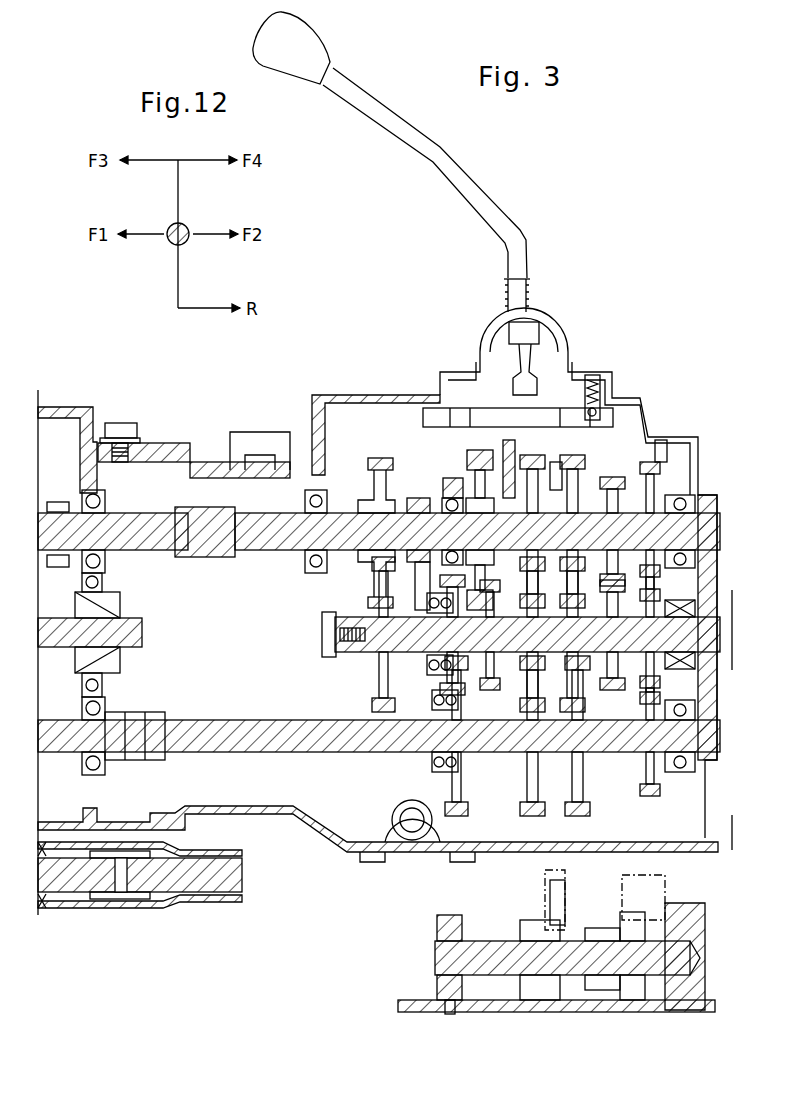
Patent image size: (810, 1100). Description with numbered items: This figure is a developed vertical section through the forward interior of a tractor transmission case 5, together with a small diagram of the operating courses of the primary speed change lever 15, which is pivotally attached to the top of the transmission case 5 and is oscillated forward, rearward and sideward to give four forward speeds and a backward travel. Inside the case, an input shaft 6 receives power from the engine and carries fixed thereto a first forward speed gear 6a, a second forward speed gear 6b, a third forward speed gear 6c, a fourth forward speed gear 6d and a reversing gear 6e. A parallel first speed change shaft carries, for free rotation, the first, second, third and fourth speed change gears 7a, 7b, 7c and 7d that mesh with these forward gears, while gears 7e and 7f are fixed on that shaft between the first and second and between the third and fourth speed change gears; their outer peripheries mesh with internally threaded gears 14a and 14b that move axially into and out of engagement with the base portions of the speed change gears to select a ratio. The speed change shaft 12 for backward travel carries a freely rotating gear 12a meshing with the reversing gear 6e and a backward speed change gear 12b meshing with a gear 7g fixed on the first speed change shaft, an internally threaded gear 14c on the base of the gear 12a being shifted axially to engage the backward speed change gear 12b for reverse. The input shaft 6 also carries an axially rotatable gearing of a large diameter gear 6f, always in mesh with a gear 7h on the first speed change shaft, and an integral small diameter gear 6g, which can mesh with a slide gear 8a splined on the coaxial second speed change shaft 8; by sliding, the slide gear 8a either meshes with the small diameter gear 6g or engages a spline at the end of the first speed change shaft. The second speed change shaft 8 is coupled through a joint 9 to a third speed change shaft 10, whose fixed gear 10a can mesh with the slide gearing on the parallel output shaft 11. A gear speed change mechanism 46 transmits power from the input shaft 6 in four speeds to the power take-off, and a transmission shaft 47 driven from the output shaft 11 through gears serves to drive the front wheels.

In FIG. 12, the primary speed change lever 15 is at (170, 246).
In FIG. 3, the primary speed change lever 15 is at (320, 52).
In FIG. 3, the transmission case 5 is at (318, 835).
In FIG. 3, the input shaft 6 is at (345, 658).
In FIG. 3, the first forward speed gear 6a is at (410, 755).
In FIG. 3, the second forward speed gear 6b is at (500, 560).
In FIG. 3, the third forward speed gear 6c is at (597, 720).
In FIG. 3, the fourth forward speed gear 6d is at (685, 683).
In FIG. 3, the reversing gear 6e is at (692, 522).
In FIG. 3, the large diameter gear 6f is at (403, 707).
In FIG. 3, the small diameter gear 6g is at (332, 592).
In FIG. 3, the first speed change gear 7a is at (410, 503).
In FIG. 3, the second speed change gear 7b is at (496, 640).
In FIG. 3, the third speed change gear 7c is at (620, 488).
In FIG. 3, the fourth speed change gear 7d is at (657, 442).
In FIG. 3, the gear 7e is at (478, 507).
In FIG. 3, the gear 7f is at (598, 455).
In FIG. 3, the gear 7g is at (562, 455).
In FIG. 3, the gear 7h is at (452, 470).
In FIG. 3, the second speed change shaft 8 is at (262, 540).
In FIG. 3, the slide gear 8a is at (373, 457).
In FIG. 3, the joint 9 is at (205, 515).
In FIG. 3, the third speed change shaft 10 is at (148, 525).
In FIG. 3, the gear 10a is at (60, 500).
In FIG. 3, the output shaft 11 is at (140, 633).
In FIG. 3, the speed change shaft for backward travel 12 is at (437, 958).
In FIG. 3, the gear 12a is at (632, 992).
In FIG. 3, the backward speed change gear 12b is at (552, 998).
In FIG. 3, the internally threaded gear 14a is at (487, 420).
In FIG. 3, the internally threaded gear 14b is at (650, 462).
In FIG. 3, the internally threaded gear 14c is at (590, 992).
In FIG. 3, the gear speed change mechanism 46 is at (503, 823).
In FIG. 3, the transmission shaft 47 is at (72, 880).